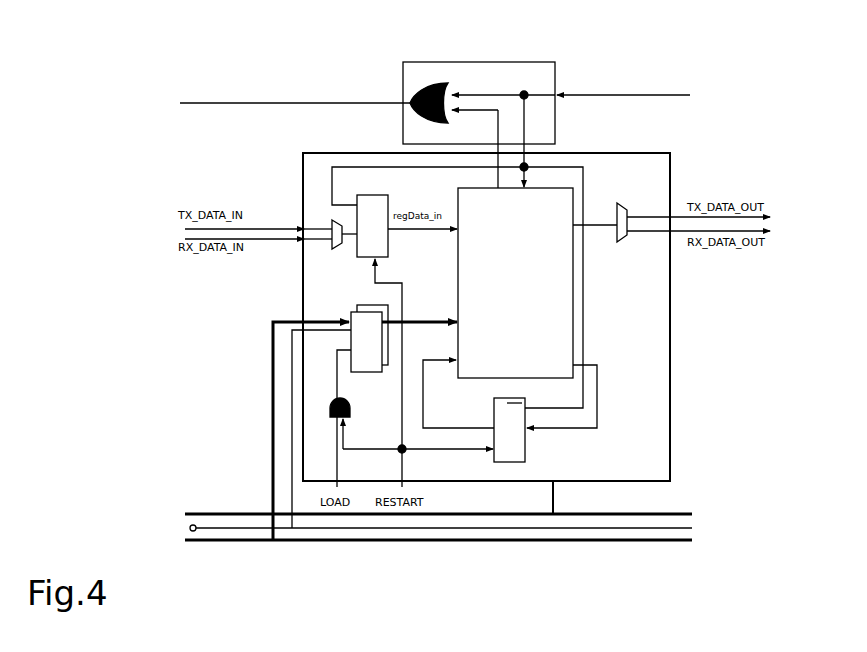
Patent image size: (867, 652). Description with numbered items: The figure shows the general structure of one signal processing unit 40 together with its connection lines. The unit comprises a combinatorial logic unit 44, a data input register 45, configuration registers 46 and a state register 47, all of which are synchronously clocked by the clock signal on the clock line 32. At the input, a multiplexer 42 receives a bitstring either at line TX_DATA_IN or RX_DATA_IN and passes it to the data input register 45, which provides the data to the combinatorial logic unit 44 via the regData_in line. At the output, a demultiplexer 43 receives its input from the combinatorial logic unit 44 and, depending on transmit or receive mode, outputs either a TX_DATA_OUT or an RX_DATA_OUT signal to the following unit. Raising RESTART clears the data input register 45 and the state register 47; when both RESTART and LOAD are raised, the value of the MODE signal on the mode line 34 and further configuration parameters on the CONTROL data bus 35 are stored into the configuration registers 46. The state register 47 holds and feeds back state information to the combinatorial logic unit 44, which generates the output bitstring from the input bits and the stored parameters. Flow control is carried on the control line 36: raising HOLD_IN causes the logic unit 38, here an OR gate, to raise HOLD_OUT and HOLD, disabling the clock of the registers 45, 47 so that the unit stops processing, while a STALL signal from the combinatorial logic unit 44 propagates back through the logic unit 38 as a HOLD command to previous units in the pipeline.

The clock line 32 is at (218, 512).
The mode line 34 is at (190, 528).
The CONTROL data bus 35 is at (692, 540).
The control line 36 is at (318, 103).
The logic unit 38 is at (490, 62).
The signal processing unit 40 is at (671, 403).
The multiplexer 42 is at (337, 248).
The demultiplexer 43 is at (617, 245).
The combinatorial logic unit 44 is at (527, 296).
The data input register 45 is at (385, 195).
The configuration registers 46 is at (360, 373).
The state register 47 is at (527, 449).